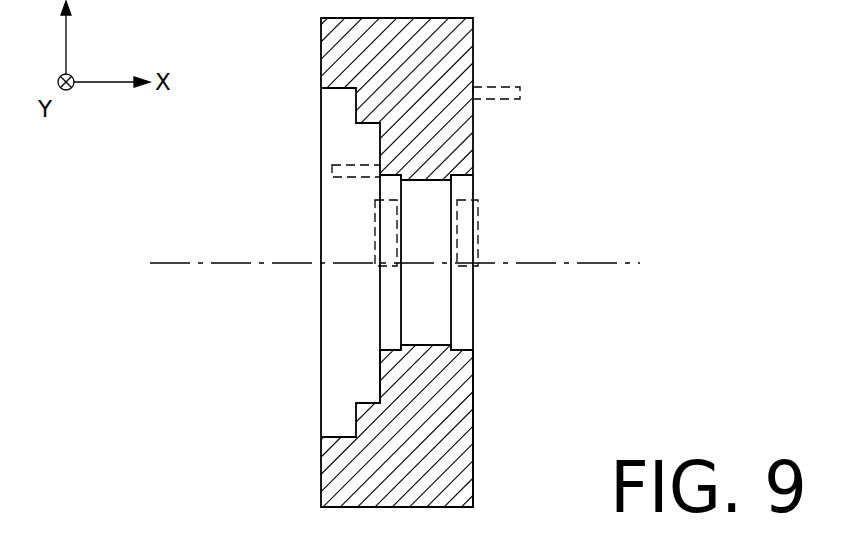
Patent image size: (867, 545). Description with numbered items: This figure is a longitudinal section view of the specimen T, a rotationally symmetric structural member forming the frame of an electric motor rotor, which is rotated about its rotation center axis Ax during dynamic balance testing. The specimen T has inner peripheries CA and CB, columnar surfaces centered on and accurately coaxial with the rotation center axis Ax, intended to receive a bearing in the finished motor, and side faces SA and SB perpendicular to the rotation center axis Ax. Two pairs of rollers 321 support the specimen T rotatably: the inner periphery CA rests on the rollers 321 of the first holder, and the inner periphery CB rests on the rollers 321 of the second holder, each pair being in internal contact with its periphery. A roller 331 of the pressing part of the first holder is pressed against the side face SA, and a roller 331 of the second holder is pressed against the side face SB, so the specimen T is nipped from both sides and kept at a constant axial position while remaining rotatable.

The specimen T is at (243, 353).
The rotation center axis Ax is at (602, 263).
The inner periphery CB is at (388, 349).
The inner periphery CA is at (465, 349).
The side face SB is at (380, 365).
The side face SA is at (473, 402).
The roller 331 is at (350, 163).
The roller 321 is at (375, 207).